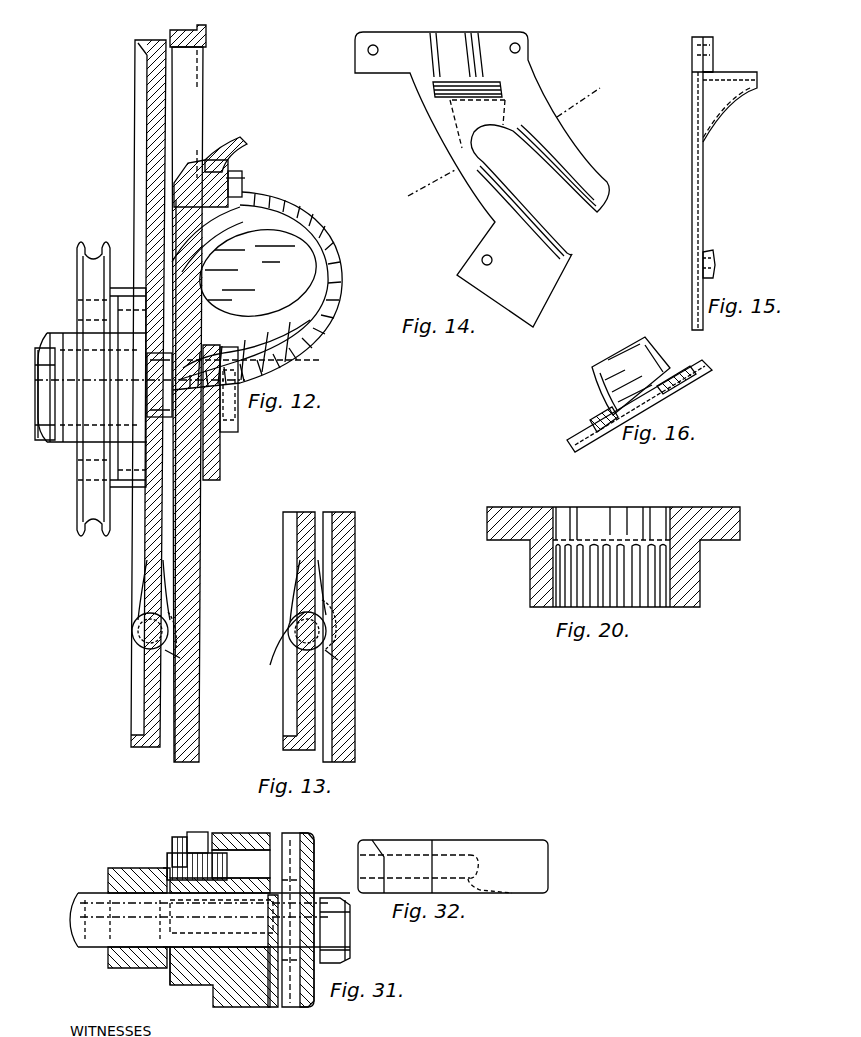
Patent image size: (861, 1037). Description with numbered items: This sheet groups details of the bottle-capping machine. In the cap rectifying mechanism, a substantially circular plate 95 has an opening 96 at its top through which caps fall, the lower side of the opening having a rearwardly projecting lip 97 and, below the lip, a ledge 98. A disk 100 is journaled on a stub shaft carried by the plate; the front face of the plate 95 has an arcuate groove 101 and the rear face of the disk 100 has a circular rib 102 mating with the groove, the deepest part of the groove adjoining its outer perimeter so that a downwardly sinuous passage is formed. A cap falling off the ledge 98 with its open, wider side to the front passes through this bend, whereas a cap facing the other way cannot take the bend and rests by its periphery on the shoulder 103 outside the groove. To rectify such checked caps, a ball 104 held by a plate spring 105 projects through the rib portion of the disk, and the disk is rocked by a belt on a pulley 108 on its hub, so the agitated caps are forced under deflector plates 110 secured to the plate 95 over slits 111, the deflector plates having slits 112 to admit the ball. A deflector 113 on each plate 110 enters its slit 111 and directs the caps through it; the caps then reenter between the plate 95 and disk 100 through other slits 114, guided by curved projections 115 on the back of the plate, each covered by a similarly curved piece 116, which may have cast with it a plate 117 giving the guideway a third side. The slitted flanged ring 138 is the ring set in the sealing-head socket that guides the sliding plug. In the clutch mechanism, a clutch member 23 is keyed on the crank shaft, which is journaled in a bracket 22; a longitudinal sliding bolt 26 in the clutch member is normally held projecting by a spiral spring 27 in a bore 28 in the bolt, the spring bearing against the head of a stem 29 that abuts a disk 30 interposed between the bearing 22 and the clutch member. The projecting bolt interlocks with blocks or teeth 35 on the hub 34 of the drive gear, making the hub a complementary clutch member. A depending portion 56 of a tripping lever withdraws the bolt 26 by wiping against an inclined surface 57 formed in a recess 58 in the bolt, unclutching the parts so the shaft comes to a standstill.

In FIG. 31, the bracket 22 is at (126, 968).
In FIG. 31, the clutch member 23 is at (204, 985).
In FIG. 31, the sliding bolt 26 is at (242, 842).
In FIG. 32, the sliding bolt 26 is at (497, 846).
In FIG. 31, the spiral spring 27 is at (90, 948).
In FIG. 31, the bore 28 is at (170, 864).
In FIG. 32, the bore 28 is at (514, 896).
In FIG. 31, the stem 29 is at (170, 858).
In FIG. 31, the disk 30 is at (166, 975).
In FIG. 31, the hub 34 is at (300, 1008).
In FIG. 31, the blocks or teeth 35 is at (274, 1008).
In FIG. 31, the depending portion 56 is at (208, 838).
In FIG. 31, the inclined surface 57 is at (190, 832).
In FIG. 32, the inclined surface 57 is at (386, 846).
In FIG. 31, the recess 58 is at (226, 896).
In FIG. 32, the recess 58 is at (436, 856).
In FIG. 12, the circular plate 95 is at (196, 708).
In FIG. 13, the circular plate 95 is at (356, 702).
In FIG. 12, the opening 96 is at (188, 101).
In FIG. 12, the lip 97 is at (244, 146).
In FIG. 12, the ledge 98 is at (186, 165).
In FIG. 12, the disk 100 is at (146, 710).
In FIG. 13, the disk 100 is at (300, 706).
In FIG. 12, the groove 101 is at (178, 642).
In FIG. 13, the groove 101 is at (330, 640).
In FIG. 12, the circular rib 102 is at (135, 622).
In FIG. 12, the shoulder 103 is at (180, 658).
In FIG. 13, the shoulder 103 is at (338, 660).
In FIG. 13, the ball 104 is at (328, 622).
In FIG. 13, the plate spring 105 is at (278, 651).
In FIG. 12, the pulley 108 is at (80, 535).
In FIG. 14, the deflector plate 110 is at (573, 157).
In FIG. 15, the deflector plate 110 is at (703, 211).
In FIG. 16, the deflector plate 110 is at (688, 383).
In FIG. 12, the slit 111 is at (242, 190).
In FIG. 14, the slit 112 is at (507, 193).
In FIG. 14, the deflector 113 is at (500, 90).
In FIG. 15, the deflector 113 is at (740, 98).
In FIG. 16, the deflector 113 is at (656, 345).
In FIG. 12, the slit 114 is at (190, 395).
In FIG. 12, the curved projection 115 is at (292, 236).
In FIG. 12, the curved piece 116 is at (318, 350).
In FIG. 12, the plate 117 is at (258, 273).
In FIG. 20, the slitted flanged ring 138 is at (496, 542).